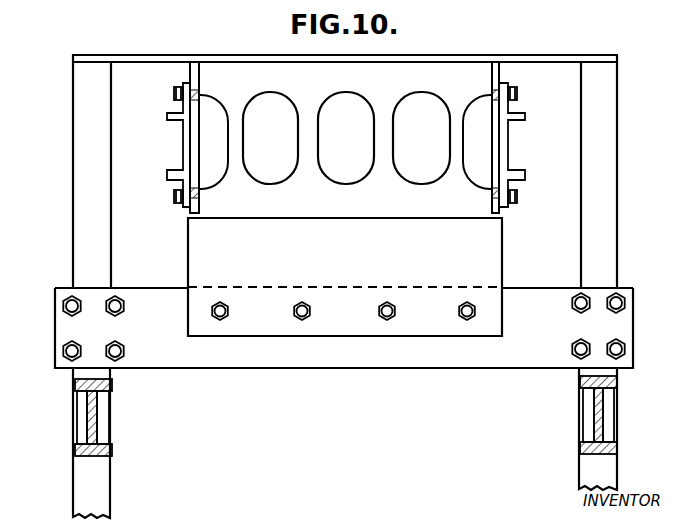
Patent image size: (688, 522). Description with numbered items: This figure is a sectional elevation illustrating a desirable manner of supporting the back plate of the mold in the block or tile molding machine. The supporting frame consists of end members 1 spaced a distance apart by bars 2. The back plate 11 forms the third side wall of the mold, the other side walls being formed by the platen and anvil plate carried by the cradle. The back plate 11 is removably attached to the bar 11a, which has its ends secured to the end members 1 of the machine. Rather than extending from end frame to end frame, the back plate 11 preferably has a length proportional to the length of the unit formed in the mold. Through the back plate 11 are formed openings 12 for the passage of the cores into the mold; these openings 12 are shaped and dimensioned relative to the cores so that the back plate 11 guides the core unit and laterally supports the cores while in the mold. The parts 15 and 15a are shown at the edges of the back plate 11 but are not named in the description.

The end members 1 is at (70, 219).
The bars 2 is at (85, 415).
The back plate 11 is at (478, 248).
The bar 11a is at (559, 272).
The openings 12 is at (346, 138).
The bracket 15 is at (181, 144).
The strip 15a is at (492, 198).